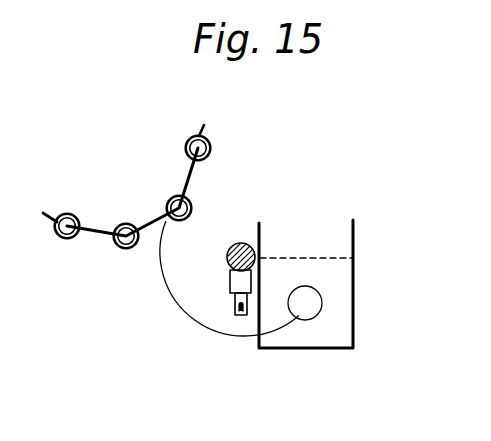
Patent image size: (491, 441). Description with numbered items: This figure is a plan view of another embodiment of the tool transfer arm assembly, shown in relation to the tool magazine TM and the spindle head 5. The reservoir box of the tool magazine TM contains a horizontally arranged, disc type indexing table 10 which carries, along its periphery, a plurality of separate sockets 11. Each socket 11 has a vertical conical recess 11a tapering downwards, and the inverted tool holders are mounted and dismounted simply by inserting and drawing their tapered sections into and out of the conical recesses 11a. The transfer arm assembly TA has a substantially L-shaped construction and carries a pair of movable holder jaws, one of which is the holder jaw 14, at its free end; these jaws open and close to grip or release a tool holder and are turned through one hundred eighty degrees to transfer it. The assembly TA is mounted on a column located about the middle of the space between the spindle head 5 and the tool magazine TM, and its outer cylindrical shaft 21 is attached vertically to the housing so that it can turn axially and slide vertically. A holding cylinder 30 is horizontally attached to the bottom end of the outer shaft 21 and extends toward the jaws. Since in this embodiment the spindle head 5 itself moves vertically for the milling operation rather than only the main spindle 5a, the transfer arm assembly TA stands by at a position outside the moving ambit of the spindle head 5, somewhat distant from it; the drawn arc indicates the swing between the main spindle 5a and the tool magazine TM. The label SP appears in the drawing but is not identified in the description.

The spindle head 5 is at (351, 327).
The main spindle 5a is at (302, 308).
The indexing table 10 is at (93, 235).
The socket 11 is at (188, 212).
The conical recess 11a is at (134, 229).
The holder jaw 14 is at (235, 307).
The outer cylindrical shaft 21 is at (227, 253).
The holding cylinder 30 is at (231, 282).
The spray unit SP is at (226, 263).
The tool magazine TM is at (171, 230).
The transfer arm assembly TA is at (315, 289).